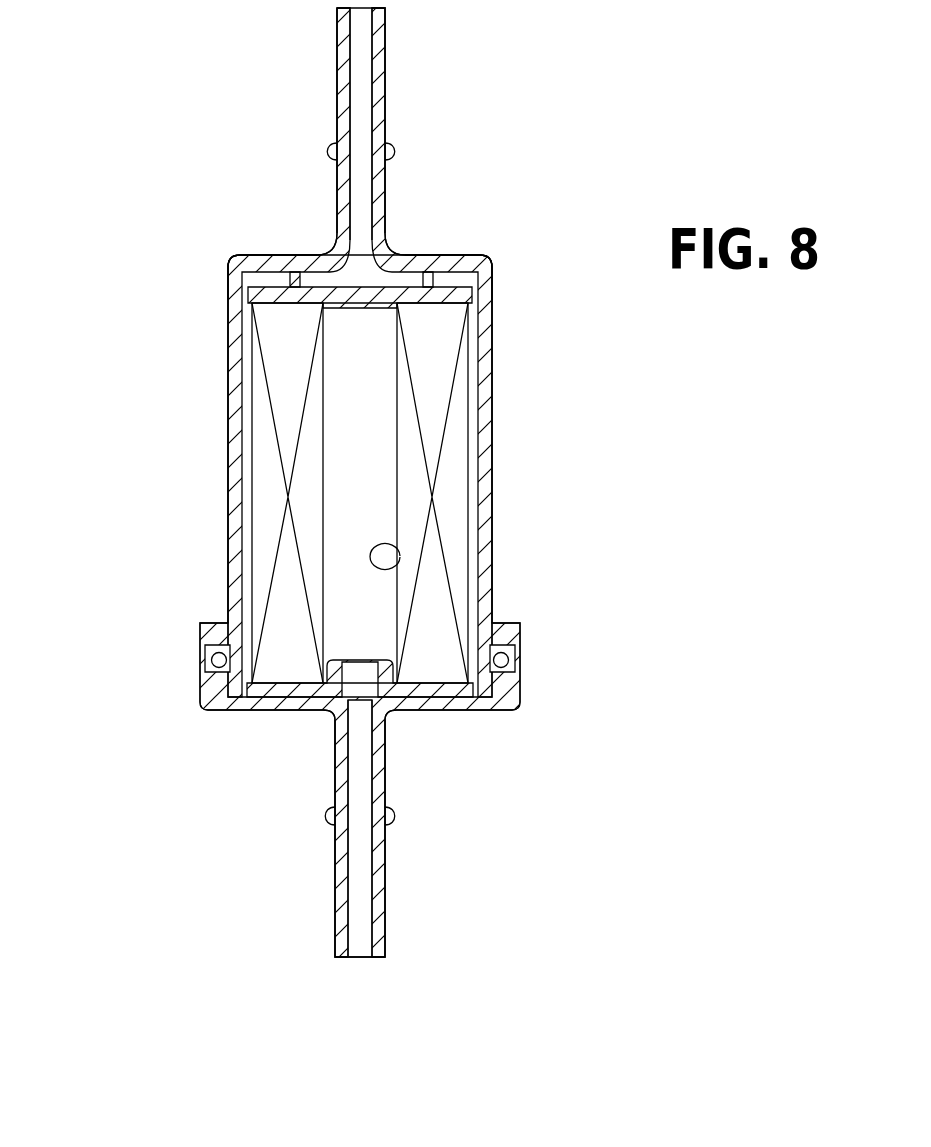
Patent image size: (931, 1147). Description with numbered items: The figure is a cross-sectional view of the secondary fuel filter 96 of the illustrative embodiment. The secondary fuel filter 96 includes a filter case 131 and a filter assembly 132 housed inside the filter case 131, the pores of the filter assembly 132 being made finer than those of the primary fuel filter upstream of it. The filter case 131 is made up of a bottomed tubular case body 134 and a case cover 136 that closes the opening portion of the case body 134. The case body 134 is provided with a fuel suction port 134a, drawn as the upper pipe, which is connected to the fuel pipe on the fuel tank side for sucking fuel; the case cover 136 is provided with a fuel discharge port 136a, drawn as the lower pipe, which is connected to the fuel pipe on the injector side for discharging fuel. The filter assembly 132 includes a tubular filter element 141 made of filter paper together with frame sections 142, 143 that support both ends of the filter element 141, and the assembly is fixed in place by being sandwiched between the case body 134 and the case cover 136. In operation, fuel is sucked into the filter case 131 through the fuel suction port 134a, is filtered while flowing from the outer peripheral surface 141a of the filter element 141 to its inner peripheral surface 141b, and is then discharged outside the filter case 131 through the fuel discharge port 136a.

The secondary fuel filter 96 is at (215, 152).
The filter case 131 is at (228, 417).
The filter assembly 132 is at (470, 262).
The case body 134 is at (228, 498).
The fuel suction port 134a is at (342, 82).
The case cover 136 is at (227, 703).
The fuel discharge port 136a is at (335, 871).
The filter element 141 is at (470, 462).
The outer peripheral surface 141a is at (470, 348).
The inner peripheral surface 141b is at (400, 556).
The frame section 142 is at (386, 298).
The frame section 143 is at (437, 690).